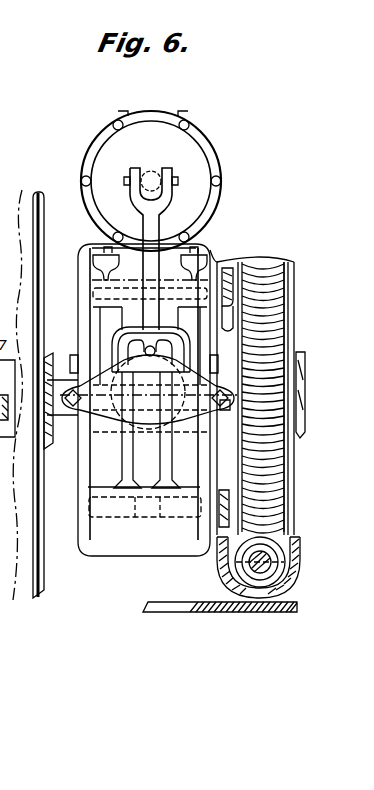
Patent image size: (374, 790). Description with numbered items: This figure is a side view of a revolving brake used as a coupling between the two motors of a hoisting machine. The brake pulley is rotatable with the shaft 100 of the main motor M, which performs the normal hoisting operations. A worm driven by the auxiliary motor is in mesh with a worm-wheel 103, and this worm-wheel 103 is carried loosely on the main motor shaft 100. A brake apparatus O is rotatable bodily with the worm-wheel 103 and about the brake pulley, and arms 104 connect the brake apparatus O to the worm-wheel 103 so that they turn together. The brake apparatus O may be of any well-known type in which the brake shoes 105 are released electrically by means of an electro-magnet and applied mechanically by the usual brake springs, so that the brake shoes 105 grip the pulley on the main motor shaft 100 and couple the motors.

The brake apparatus O is at (184, 160).
The arms 104 is at (238, 262).
The brake shoes 105 is at (108, 332).
The shaft of the main motor 100 is at (300, 388).
The worm-wheel 103 is at (279, 507).
The main motor M is at (38, 194).